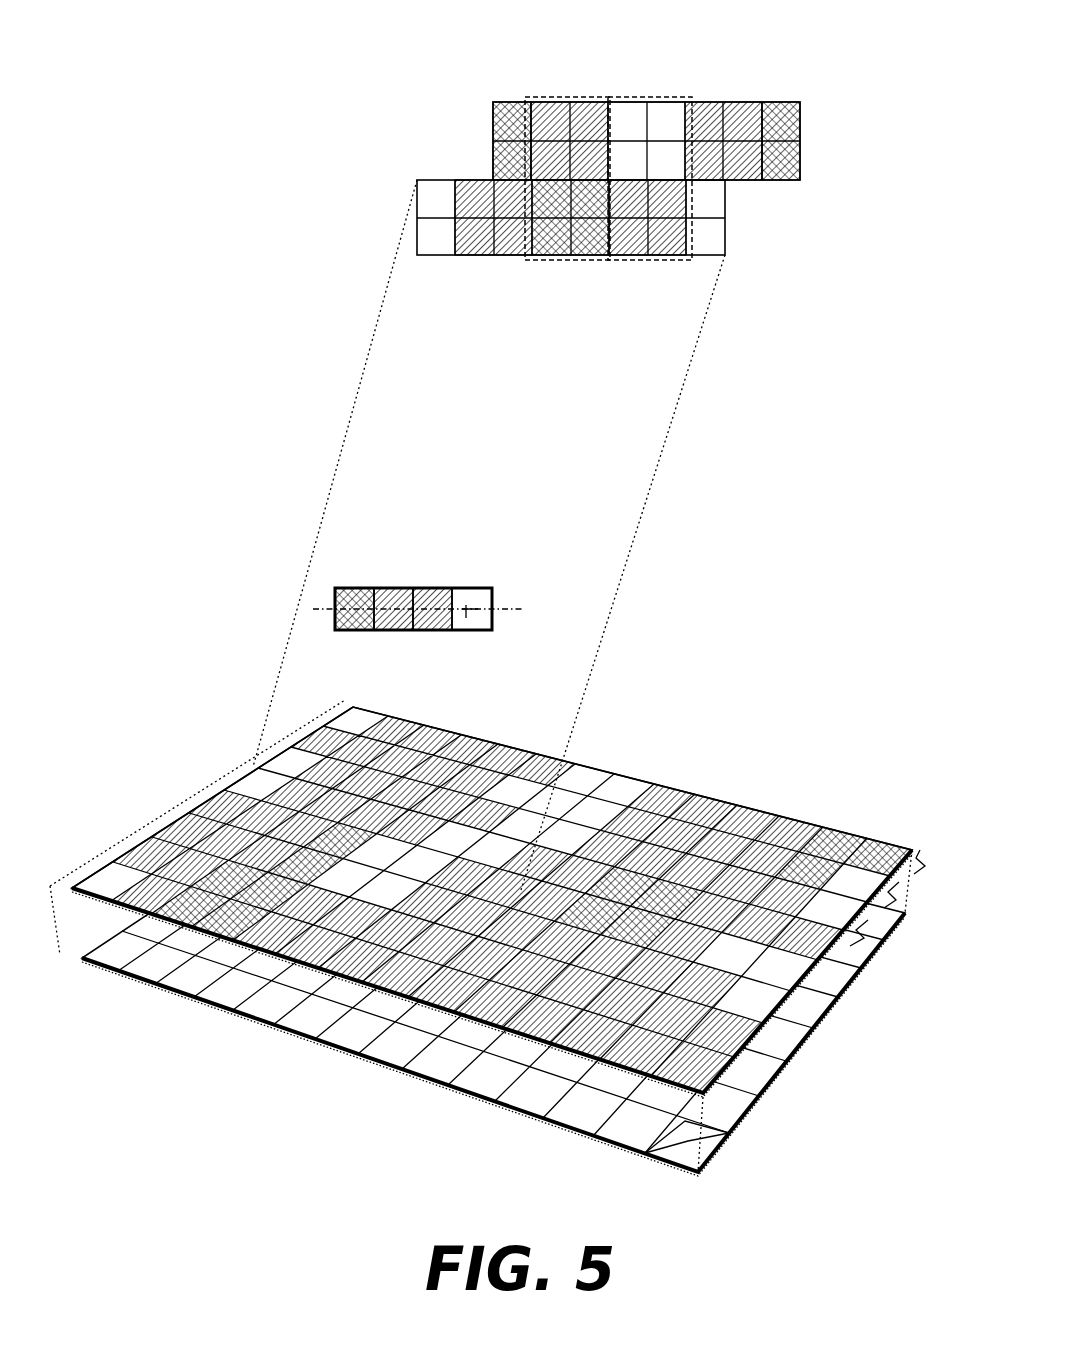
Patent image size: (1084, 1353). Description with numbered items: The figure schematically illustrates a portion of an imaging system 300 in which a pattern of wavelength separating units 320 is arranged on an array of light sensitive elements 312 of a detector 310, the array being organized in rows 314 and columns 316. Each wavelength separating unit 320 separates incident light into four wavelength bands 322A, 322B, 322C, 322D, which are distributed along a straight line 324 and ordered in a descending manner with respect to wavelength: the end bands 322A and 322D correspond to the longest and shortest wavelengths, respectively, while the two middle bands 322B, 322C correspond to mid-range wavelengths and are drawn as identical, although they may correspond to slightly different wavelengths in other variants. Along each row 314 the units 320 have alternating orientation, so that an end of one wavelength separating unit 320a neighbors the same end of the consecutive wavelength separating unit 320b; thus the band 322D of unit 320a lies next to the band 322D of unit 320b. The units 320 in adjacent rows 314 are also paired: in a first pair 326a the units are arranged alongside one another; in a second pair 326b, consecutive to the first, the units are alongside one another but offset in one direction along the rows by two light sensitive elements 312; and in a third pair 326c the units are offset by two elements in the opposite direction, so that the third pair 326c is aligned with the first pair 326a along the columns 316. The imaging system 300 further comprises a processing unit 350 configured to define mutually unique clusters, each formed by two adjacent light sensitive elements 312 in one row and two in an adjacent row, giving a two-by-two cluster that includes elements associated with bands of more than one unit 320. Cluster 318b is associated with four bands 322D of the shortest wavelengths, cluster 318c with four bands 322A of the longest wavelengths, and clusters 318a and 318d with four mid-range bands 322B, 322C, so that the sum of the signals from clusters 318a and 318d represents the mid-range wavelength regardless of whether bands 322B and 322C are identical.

The imaging system 300 is at (272, 182).
The detector 310 is at (507, 1118).
The light sensitive element 312 is at (722, 1121).
The row 314 is at (194, 936).
The column 316 is at (172, 820).
The cluster 318a is at (576, 96).
The cluster 318b is at (655, 96).
The cluster 318c is at (529, 263).
The cluster 318d is at (651, 262).
The wavelength separating unit 320 is at (416, 570).
The wavelength separating unit 320a is at (480, 128).
The wavelength separating unit 320b is at (814, 125).
The wavelength band 322A is at (355, 588).
The wavelength band 322B is at (400, 588).
The wavelength band 322C is at (430, 590).
The wavelength band 322D is at (631, 124).
The straight line 324 is at (465, 608).
The first pair 326a is at (928, 850).
The second pair 326b is at (896, 897).
The third pair 326c is at (852, 935).
The processing unit 350 is at (406, 1095).